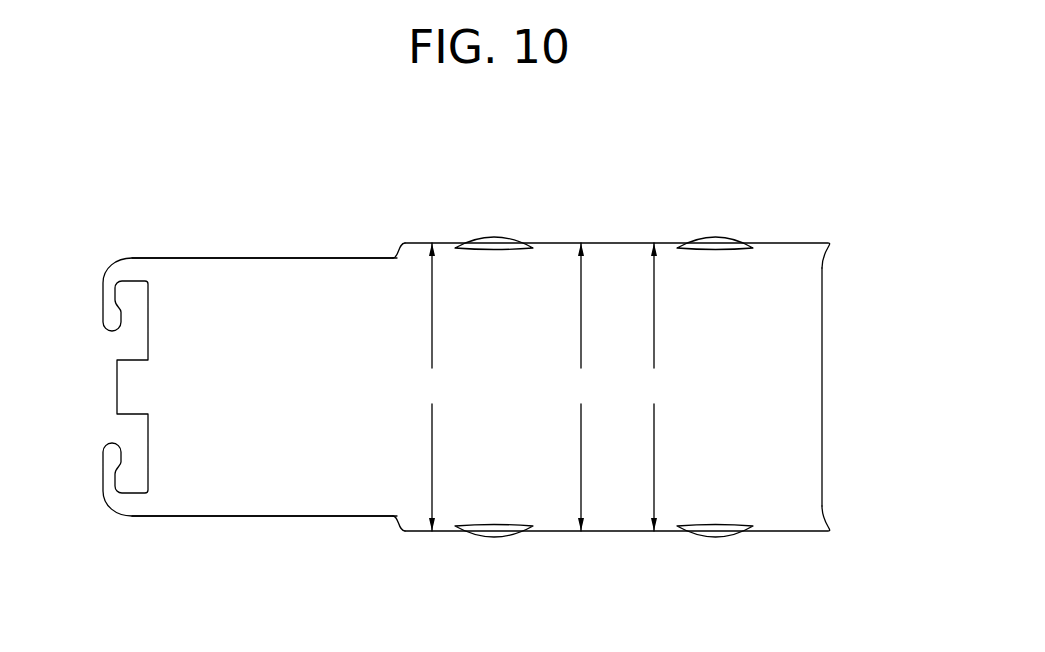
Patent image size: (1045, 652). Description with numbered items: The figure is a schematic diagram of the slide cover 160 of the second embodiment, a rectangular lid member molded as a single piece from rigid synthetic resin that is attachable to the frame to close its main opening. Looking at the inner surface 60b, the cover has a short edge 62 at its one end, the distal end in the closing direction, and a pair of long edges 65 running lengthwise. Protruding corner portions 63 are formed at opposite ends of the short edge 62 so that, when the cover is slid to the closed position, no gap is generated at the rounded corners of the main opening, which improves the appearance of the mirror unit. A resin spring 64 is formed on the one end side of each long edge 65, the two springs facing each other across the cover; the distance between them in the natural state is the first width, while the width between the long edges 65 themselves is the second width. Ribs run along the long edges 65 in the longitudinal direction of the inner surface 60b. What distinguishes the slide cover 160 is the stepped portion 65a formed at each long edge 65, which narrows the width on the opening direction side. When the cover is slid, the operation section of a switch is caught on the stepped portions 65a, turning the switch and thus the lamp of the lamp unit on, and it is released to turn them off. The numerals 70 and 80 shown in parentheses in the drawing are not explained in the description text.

The slide cover 160 is at (484, 390).
The inner surface 60b is at (210, 287).
The short edge 62 is at (148, 343).
The protruding corner portion 63 is at (833, 246).
The resin spring 64 is at (629, 390).
The rib 80 is at (495, 238).
The long edge 65 is at (262, 388).
The flat portion 70 is at (278, 258).
The stepped portion 65a is at (395, 256).